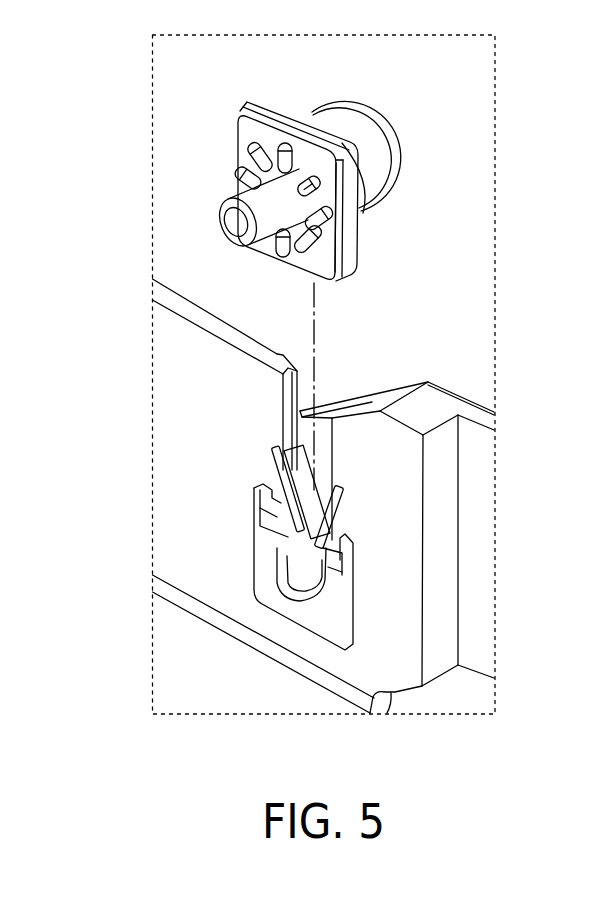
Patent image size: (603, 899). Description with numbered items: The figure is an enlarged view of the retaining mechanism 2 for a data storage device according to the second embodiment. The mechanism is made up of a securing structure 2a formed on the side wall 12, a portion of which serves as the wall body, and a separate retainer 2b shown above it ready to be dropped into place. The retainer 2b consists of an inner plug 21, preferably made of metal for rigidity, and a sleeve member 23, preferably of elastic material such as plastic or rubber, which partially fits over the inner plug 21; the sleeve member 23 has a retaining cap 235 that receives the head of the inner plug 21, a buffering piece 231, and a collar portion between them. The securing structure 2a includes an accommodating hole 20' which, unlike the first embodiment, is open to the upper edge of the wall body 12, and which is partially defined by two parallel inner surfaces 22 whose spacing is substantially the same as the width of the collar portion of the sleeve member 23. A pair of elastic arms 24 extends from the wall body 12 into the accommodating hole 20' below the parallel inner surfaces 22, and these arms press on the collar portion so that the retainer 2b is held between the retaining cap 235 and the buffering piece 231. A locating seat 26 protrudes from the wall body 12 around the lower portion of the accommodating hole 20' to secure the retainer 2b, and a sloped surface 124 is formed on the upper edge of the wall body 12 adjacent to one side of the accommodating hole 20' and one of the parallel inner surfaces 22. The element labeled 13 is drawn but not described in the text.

The retaining mechanism 2 is at (551, 221).
The securing structure 2a is at (412, 367).
The retainer 2b is at (438, 205).
The side wall 12 is at (170, 364).
The guide plate 13 is at (355, 402).
The accommodating hole 20' is at (339, 386).
The inner plug 21 is at (270, 208).
The parallel inner surfaces 22 is at (283, 412).
The sleeve member 23 is at (370, 119).
The elastic arms 24 is at (297, 485).
The locating seat 26 is at (270, 583).
The sloped surface 124 is at (355, 415).
The buffering piece 231 is at (353, 237).
The retaining cap 235 is at (373, 175).